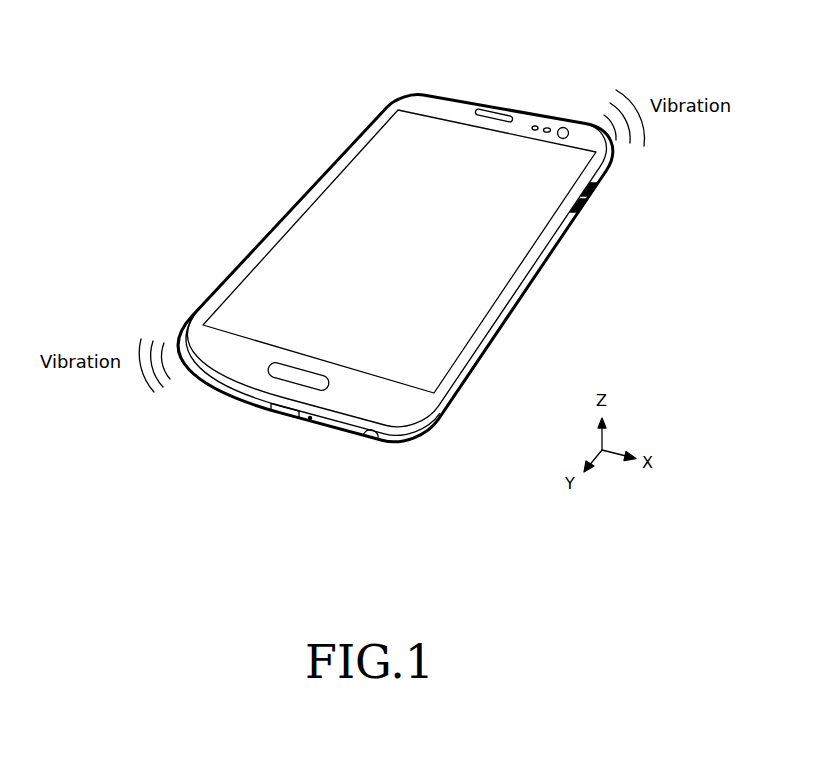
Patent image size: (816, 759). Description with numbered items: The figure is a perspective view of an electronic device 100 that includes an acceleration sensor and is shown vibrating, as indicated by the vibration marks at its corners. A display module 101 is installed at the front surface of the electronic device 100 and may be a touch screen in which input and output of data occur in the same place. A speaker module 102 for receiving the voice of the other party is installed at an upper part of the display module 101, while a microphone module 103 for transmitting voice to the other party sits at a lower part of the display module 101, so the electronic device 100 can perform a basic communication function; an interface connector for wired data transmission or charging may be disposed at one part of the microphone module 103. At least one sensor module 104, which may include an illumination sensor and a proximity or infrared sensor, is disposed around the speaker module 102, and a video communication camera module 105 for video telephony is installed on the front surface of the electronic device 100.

The electronic device 100 is at (288, 95).
The display module 101 is at (364, 170).
The speaker module 102 is at (507, 115).
The microphone module 103 is at (310, 419).
The sensor module 104 is at (537, 126).
The video communication camera module 105 is at (569, 133).